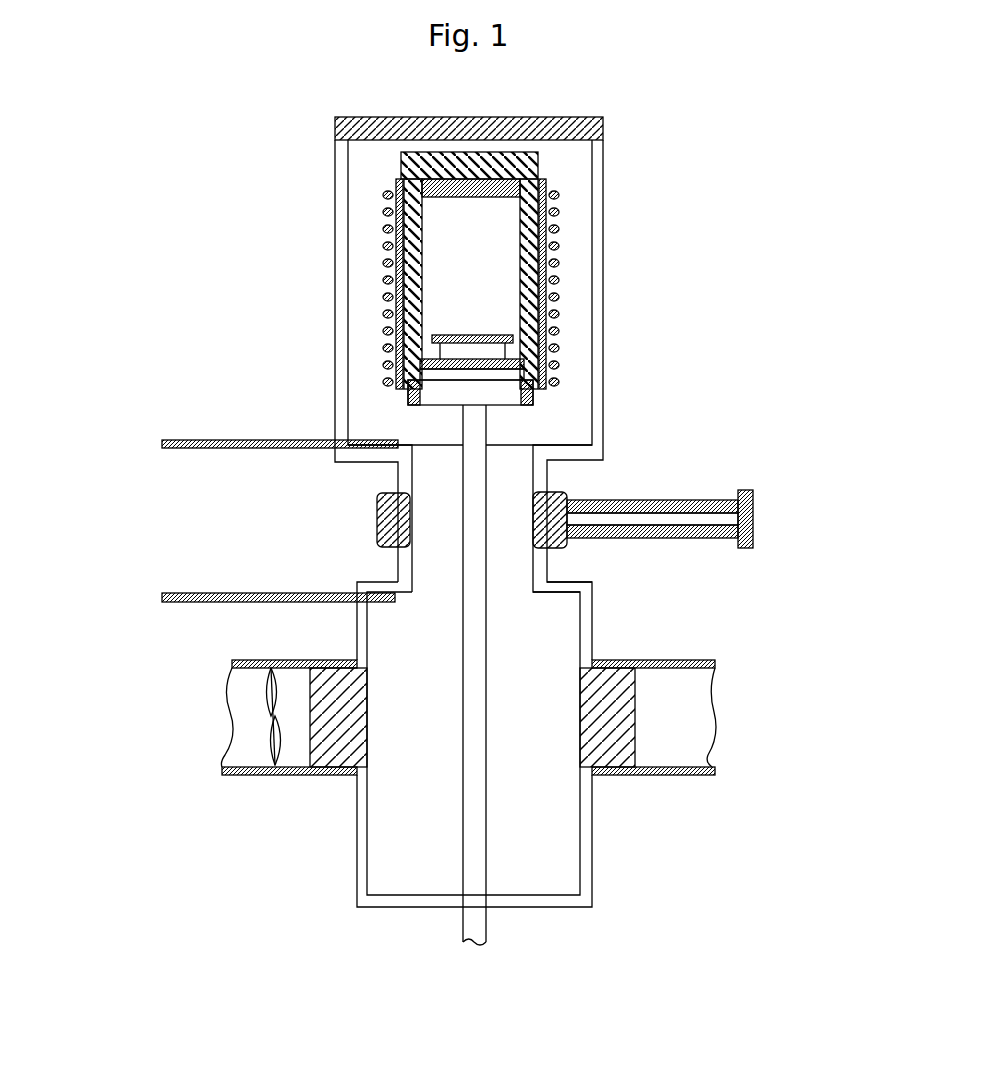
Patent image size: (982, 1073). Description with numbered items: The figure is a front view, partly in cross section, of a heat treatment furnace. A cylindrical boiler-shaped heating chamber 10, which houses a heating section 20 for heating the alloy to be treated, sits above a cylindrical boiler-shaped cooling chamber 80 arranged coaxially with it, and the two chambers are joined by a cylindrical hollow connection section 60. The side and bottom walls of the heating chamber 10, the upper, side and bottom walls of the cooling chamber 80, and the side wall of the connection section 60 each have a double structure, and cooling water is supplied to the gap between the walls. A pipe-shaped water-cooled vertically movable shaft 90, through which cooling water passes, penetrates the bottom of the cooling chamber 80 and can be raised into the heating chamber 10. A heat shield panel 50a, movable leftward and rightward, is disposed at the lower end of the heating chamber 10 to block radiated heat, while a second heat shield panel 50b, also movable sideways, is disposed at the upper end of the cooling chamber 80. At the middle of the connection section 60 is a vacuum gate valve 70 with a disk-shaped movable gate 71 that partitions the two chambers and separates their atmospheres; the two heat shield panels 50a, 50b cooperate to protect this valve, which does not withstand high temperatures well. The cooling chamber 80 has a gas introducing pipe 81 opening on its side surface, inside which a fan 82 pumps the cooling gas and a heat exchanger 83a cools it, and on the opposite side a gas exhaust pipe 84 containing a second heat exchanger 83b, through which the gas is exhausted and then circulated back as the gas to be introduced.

The heating chamber 10 is at (336, 172).
The heating section 20 is at (566, 260).
The heat shield panel 50a is at (268, 438).
The heat shield panel 50b is at (236, 605).
The connection section 60 is at (380, 468).
The vacuum gate valve 70 is at (638, 500).
The movable gate 71 is at (618, 533).
The cooling chamber 80 is at (430, 905).
The gas introducing pipe 81 is at (240, 745).
The fan 82 is at (272, 770).
The heat exchanger 83a is at (325, 775).
The heat exchanger 83b is at (615, 752).
The gas exhaust pipe 84 is at (700, 713).
The water-cooled vertically movable shaft 90 is at (480, 930).